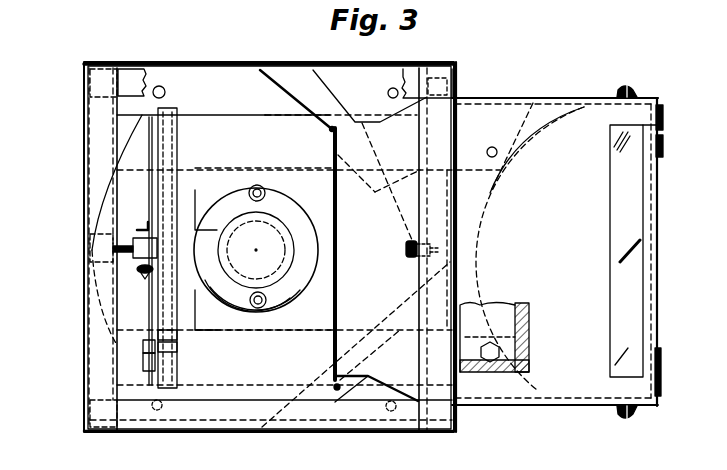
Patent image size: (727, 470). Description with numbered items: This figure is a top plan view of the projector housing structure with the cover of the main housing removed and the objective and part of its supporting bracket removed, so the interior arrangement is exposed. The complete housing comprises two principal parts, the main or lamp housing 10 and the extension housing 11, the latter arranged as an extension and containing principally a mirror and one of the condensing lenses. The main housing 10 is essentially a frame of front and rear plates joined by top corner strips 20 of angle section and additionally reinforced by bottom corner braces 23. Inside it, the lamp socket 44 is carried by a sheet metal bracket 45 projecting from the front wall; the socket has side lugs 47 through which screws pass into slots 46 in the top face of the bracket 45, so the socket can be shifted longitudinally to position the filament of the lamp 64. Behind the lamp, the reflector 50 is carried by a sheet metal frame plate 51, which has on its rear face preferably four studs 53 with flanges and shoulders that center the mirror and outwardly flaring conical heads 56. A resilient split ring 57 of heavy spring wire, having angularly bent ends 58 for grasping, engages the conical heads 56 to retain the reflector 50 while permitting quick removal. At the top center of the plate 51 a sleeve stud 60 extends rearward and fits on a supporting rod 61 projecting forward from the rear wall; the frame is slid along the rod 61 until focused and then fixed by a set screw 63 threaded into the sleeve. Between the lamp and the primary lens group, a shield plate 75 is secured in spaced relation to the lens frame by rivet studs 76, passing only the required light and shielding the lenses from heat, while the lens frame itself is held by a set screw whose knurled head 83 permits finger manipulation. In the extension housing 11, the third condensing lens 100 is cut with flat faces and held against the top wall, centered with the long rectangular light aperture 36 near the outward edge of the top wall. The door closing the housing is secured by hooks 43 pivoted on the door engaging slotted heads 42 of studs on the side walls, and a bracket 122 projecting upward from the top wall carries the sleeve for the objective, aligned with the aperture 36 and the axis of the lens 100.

The main housing 10 is at (217, 52).
The extension housing 11 is at (548, 58).
The top corner strips 20 is at (197, 414).
The bottom corner braces 23 is at (333, 373).
The light aperture 36 is at (610, 270).
The slotted heads 42 is at (663, 146).
The hooks 43 is at (663, 123).
The lamp socket 44 is at (278, 290).
The bracket 45 is at (314, 183).
The slots 46 is at (207, 188).
The side lugs 47 is at (262, 312).
The reflector 50 is at (135, 332).
The frame plate 51 is at (180, 333).
The studs 53 is at (175, 350).
The conical heads 56 is at (143, 347).
The split ring 57 is at (152, 186).
The angularly bent ends 58 is at (113, 263).
The sleeve stud 60 is at (140, 242).
The supporting rod 61 is at (188, 195).
The set screw 63 is at (140, 272).
The lamp 64 is at (305, 226).
The shield plate 75 is at (338, 265).
The rivet studs 76 is at (338, 390).
The knurled head 83 is at (406, 246).
The third condensing lens 100 is at (560, 104).
The bracket 122 is at (531, 326).